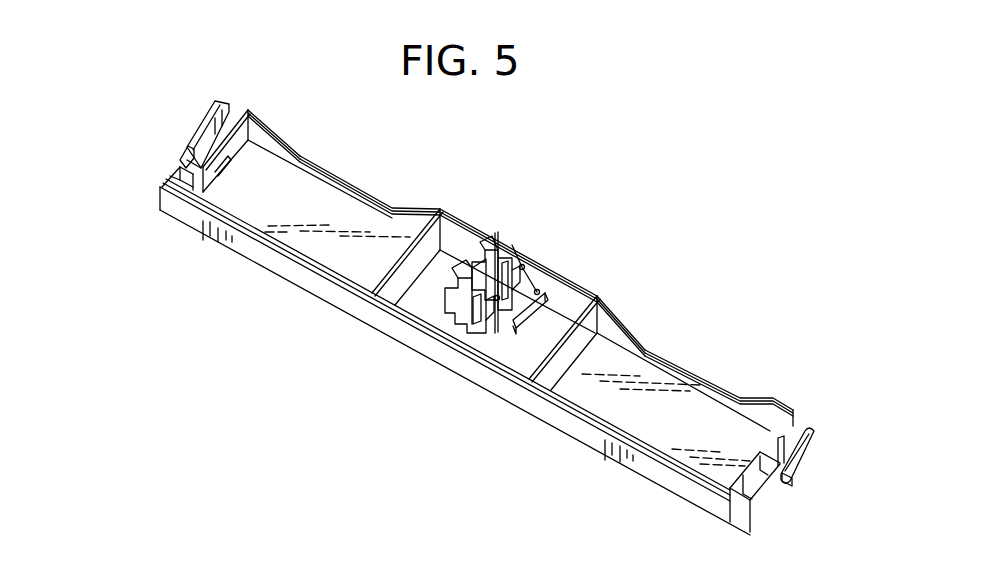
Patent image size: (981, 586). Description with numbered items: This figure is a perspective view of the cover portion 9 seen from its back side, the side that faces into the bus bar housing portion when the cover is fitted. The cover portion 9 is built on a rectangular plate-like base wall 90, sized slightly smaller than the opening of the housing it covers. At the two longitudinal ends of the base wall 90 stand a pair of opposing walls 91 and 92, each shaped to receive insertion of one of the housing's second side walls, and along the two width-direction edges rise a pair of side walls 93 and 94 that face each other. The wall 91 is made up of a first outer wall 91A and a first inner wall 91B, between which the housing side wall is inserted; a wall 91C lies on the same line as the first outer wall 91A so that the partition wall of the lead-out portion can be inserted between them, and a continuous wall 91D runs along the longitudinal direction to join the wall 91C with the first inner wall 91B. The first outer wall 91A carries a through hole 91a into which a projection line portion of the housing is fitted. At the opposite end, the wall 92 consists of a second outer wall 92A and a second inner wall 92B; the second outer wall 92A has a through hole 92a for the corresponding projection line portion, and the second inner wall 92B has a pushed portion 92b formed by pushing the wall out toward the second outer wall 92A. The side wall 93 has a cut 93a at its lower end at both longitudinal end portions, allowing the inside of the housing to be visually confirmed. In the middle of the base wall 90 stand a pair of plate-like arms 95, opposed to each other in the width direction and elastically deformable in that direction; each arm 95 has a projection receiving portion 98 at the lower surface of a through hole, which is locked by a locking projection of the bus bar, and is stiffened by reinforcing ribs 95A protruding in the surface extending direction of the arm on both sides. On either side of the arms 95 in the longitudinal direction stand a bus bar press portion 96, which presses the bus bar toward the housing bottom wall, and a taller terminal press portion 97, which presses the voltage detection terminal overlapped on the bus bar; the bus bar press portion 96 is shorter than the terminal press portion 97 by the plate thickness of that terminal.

The cover portion 9 is at (708, 322).
The base wall 90 is at (590, 392).
The opposing wall 91 is at (235, 110).
The first outer wall 91A is at (222, 114).
The through hole 91a is at (198, 138).
The first inner wall 91B is at (225, 170).
The wall 91C is at (180, 168).
The continuous wall 91D is at (207, 193).
The opposing wall 92 is at (804, 432).
The second outer wall 92A is at (805, 452).
The second inner wall 92B is at (794, 410).
The through hole 92a is at (784, 481).
The pushed portion 92b is at (766, 450).
The side wall 93 is at (607, 330).
The cut 93a is at (299, 156).
The side wall 94 is at (530, 402).
The arm 95 is at (520, 268).
The reinforcing rib 95A is at (463, 265).
The bus bar press portion 96 is at (586, 308).
The terminal press portion 97 is at (418, 255).
The projection receiving portion 98 is at (512, 245).